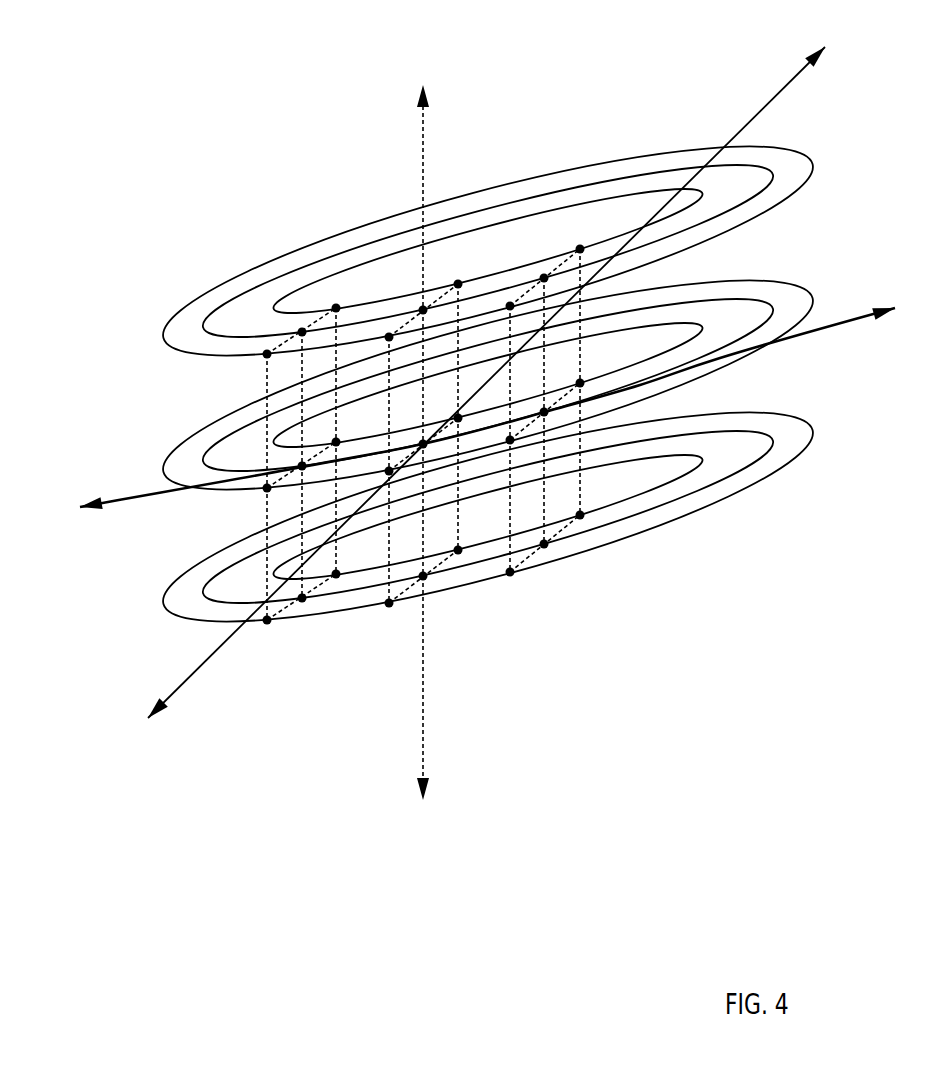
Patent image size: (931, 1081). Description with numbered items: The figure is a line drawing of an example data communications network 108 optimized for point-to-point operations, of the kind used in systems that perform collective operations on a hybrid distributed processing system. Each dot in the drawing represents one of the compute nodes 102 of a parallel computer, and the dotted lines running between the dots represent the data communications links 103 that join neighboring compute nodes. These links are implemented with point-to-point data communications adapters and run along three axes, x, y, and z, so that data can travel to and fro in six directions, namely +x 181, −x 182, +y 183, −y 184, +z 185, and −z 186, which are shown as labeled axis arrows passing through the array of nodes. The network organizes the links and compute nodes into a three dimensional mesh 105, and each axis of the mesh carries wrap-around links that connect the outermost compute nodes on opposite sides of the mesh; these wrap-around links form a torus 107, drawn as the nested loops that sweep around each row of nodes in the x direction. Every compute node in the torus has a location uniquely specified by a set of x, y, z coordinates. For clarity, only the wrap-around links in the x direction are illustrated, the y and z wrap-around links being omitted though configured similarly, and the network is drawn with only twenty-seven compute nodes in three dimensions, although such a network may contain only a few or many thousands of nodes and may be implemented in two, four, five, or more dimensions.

The compute nodes 102 is at (510, 575).
The data communications links 103 is at (267, 512).
The three dimensional mesh 105 is at (580, 249).
The torus 107 is at (240, 248).
The data communications network 108 is at (488, 532).
The +x direction 181 is at (903, 341).
The −x direction 182 is at (45, 546).
The +y direction 183 is at (840, 76).
The −y direction 184 is at (143, 771).
The +z direction 185 is at (410, 77).
The −z direction 186 is at (427, 722).